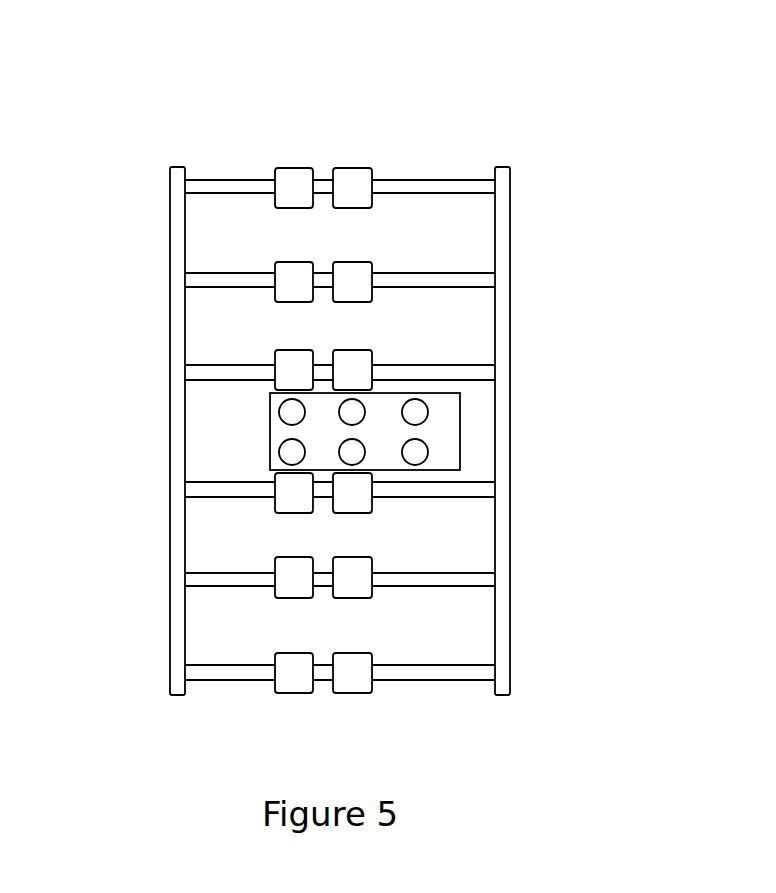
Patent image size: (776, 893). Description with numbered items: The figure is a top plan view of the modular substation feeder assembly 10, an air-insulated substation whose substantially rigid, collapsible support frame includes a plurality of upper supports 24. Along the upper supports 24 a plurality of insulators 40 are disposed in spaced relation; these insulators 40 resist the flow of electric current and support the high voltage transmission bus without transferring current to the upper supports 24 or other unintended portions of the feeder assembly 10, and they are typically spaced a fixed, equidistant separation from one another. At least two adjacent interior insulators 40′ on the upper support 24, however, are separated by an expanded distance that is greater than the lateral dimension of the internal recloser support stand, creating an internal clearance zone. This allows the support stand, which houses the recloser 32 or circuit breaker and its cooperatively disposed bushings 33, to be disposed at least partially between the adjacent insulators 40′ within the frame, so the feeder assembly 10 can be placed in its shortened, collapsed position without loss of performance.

The modular substation feeder assembly 10 is at (651, 113).
The upper supports 24 is at (453, 178).
The insulators 40 is at (290, 168).
The interior adjacent insulators 40′ is at (283, 355).
The recloser 32 is at (270, 433).
The bushings 33 is at (425, 405).